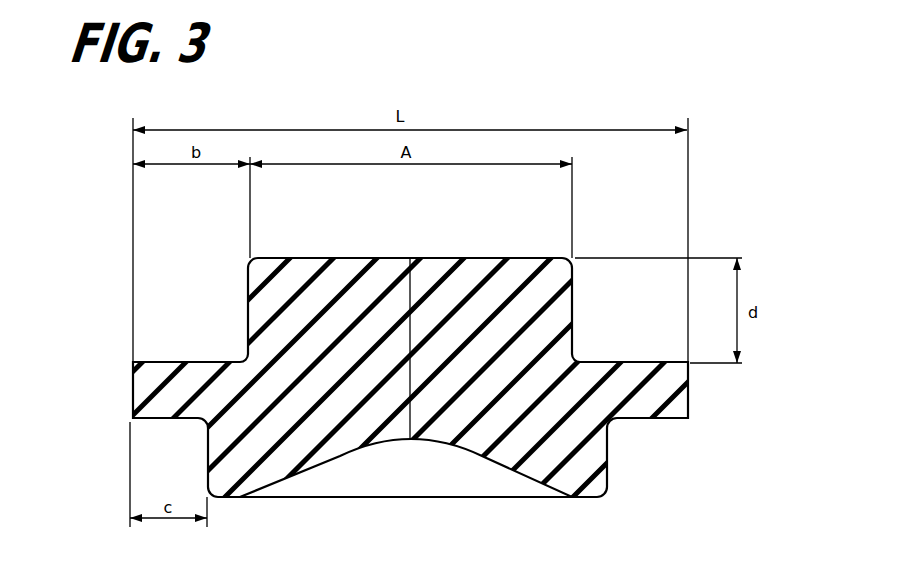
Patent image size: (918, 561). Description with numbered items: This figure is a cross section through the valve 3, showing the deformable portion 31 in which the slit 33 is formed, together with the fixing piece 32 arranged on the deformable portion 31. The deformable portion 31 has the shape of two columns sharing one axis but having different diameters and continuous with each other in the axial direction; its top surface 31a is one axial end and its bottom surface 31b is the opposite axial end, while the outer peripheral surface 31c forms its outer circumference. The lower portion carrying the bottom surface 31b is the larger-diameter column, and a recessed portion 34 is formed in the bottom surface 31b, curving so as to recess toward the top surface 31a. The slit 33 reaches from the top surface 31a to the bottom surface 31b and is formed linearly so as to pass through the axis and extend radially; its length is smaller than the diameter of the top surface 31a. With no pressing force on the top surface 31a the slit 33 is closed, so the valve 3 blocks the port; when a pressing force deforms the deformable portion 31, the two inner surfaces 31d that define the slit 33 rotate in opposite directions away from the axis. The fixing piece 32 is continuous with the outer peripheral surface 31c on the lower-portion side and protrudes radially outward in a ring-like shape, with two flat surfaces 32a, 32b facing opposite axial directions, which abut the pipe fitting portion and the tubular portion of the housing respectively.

The valve 3 is at (612, 207).
The deformable portion 31 is at (354, 279).
The top surface 31a is at (497, 258).
The bottom surface 31b is at (586, 498).
The outer peripheral surface 31c is at (608, 455).
The inner surfaces 31d is at (408, 442).
The fixing piece 32 is at (640, 364).
The flat surface 32a is at (183, 361).
The flat surface 32b is at (168, 420).
The slit 33 is at (411, 247).
The recessed portion 34 is at (330, 461).